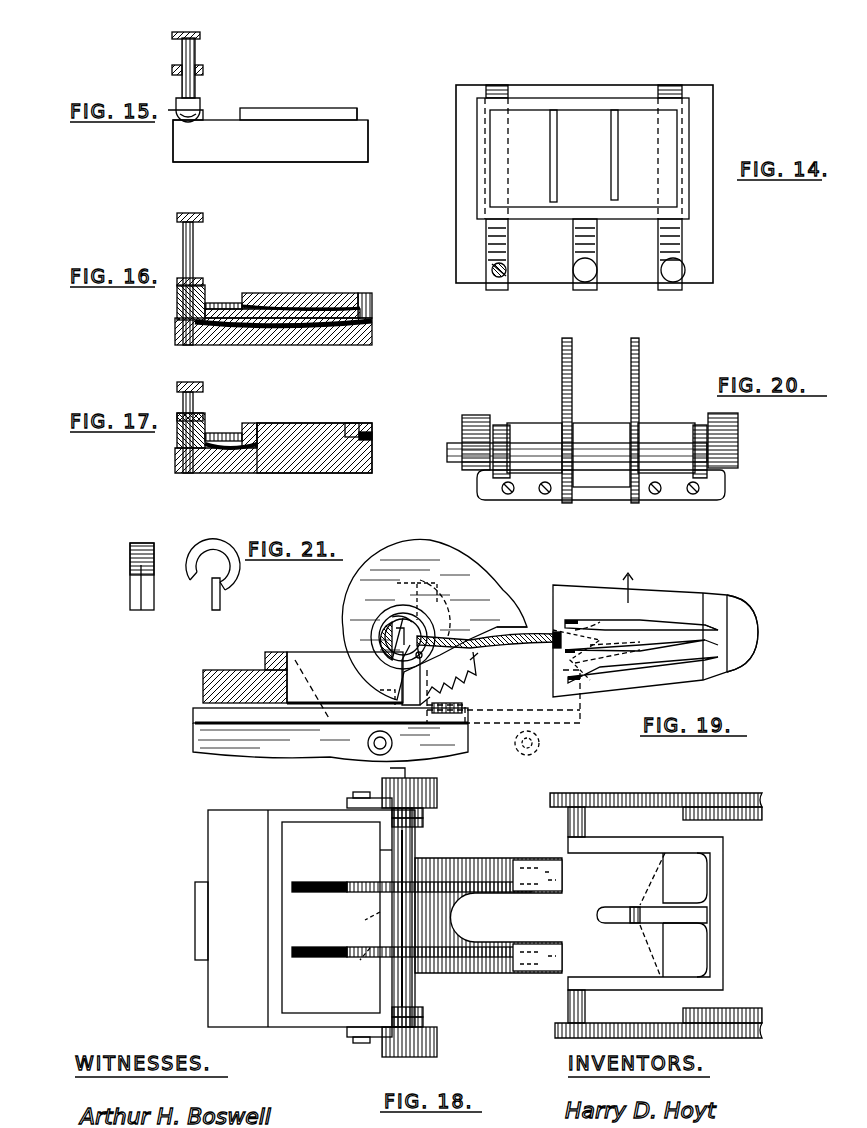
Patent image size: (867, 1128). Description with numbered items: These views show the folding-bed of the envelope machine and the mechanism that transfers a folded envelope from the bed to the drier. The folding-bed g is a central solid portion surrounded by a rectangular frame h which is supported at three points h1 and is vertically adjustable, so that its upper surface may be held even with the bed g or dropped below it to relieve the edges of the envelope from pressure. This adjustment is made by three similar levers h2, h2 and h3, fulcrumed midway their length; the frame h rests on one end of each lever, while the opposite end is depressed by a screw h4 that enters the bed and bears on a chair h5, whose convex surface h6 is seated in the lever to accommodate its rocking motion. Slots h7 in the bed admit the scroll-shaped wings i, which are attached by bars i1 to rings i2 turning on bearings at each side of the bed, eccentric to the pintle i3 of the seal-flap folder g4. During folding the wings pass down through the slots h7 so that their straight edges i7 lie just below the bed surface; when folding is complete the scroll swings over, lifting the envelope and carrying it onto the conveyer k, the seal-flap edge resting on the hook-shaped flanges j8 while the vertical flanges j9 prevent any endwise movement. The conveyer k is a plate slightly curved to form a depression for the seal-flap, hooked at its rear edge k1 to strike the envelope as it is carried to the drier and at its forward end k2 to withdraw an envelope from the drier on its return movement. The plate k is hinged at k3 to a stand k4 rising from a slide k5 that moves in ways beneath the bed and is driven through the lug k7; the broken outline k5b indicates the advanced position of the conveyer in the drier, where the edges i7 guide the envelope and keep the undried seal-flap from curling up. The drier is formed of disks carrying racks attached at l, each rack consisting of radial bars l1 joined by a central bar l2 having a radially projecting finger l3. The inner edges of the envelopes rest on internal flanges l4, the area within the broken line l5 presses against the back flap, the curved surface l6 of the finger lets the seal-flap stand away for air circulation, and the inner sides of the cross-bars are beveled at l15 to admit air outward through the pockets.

In FIG. 15, the rectangular frame h is at (358, 111).
In FIG. 16, the rectangular frame h is at (248, 294).
In FIG. 17, the rectangular frame h is at (258, 424).
In FIG. 14, the rectangular frame h is at (484, 141).
In FIG. 19, the rectangular frame h is at (268, 655).
In FIG. 18, the rectangular frame h is at (268, 836).
In FIG. 16, the supporting points h1 is at (364, 303).
In FIG. 17, the supporting points h1 is at (365, 432).
In FIG. 14, the supporting points h1 is at (500, 109).
In FIG. 15, the adjusting lever h2 is at (170, 132).
In FIG. 16, the adjusting lever h2 is at (272, 345).
In FIG. 14, the adjusting lever h2 is at (588, 197).
In FIG. 17, the adjusting lever h3 is at (218, 473).
In FIG. 14, the adjusting lever h3 is at (586, 264).
In FIG. 15, the screw h4 is at (196, 50).
In FIG. 16, the screw h4 is at (195, 233).
In FIG. 17, the screw h4 is at (195, 396).
In FIG. 14, the screw h4 is at (478, 293).
In FIG. 15, the chair h5 is at (200, 103).
In FIG. 16, the chair h5 is at (203, 290).
In FIG. 17, the chair h5 is at (203, 418).
In FIG. 14, the chair h5 is at (492, 268).
In FIG. 15, the convex surface h6 is at (195, 121).
In FIG. 16, the convex surface h6 is at (177, 301).
In FIG. 17, the convex surface h6 is at (205, 433).
In FIG. 14, the slot h7 is at (557, 141).
In FIG. 18, the slot h7 is at (318, 883).
In FIG. 15, the folding-bed g is at (298, 104).
In FIG. 16, the folding-bed g is at (306, 293).
In FIG. 17, the folding-bed g is at (308, 423).
In FIG. 14, the folding-bed g is at (583, 158).
In FIG. 19, the folding-bed g is at (312, 652).
In FIG. 18, the folding-bed g is at (331, 917).
In FIG. 20, the seal-flap folder g4 is at (598, 425).
In FIG. 19, the seal-flap folder g4 is at (383, 620).
In FIG. 18, the seal-flap folder g4 is at (400, 920).
In FIG. 20, the scroll-shaped wing i is at (562, 368).
In FIG. 19, the scroll-shaped wing i is at (434, 622).
In FIG. 18, the scroll-shaped wing i is at (360, 975).
In FIG. 20, the bar i1 is at (530, 500).
In FIG. 20, the ring i2 is at (474, 418).
In FIG. 18, the ring i2 is at (438, 788).
In FIG. 20, the pintle i3 is at (452, 470).
In FIG. 19, the pintle i3 is at (383, 635).
In FIG. 18, the pintle i3 is at (392, 850).
In FIG. 19, the straight edge i7 is at (505, 623).
In FIG. 20, the flange j8 is at (515, 440).
In FIG. 21, the flange j8 is at (152, 550).
In FIG. 19, the flange j8 is at (410, 620).
In FIG. 18, the flange j8 is at (425, 824).
In FIG. 20, the vertical flange j9 is at (499, 424).
In FIG. 21, the vertical flange j9 is at (130, 545).
In FIG. 18, the vertical flange j9 is at (425, 810).
In FIG. 19, the conveyer k is at (500, 655).
In FIG. 18, the conveyer k is at (550, 888).
In FIG. 19, the rear hook k1 is at (462, 648).
In FIG. 19, the forward hook k2 is at (555, 646).
In FIG. 19, the hinge k3 is at (448, 672).
In FIG. 19, the stand k4 is at (345, 670).
In FIG. 19, the slide k5 is at (330, 716).
In FIG. 18, the slide k5 is at (195, 913).
In FIG. 19, the hidden outline k5b is at (503, 712).
In FIG. 19, the lug k7 is at (368, 746).
In FIG. 19, the rack attachment l is at (680, 592).
In FIG. 18, the rack attachment l is at (570, 815).
In FIG. 19, the radial bar l1 is at (678, 622).
In FIG. 18, the radial bar l1 is at (634, 1002).
In FIG. 18, the central bar l2 is at (700, 882).
In FIG. 18, the finger l3 is at (678, 920).
In FIG. 19, the internal flange l4 is at (708, 593).
In FIG. 18, the internal flange l4 is at (735, 820).
In FIG. 18, the pressing surface l5 is at (652, 962).
In FIG. 18, the curved surface l6 is at (618, 925).
In FIG. 19, the beveled edge l15 is at (720, 637).
In FIG. 18, the beveled edge l15 is at (723, 892).